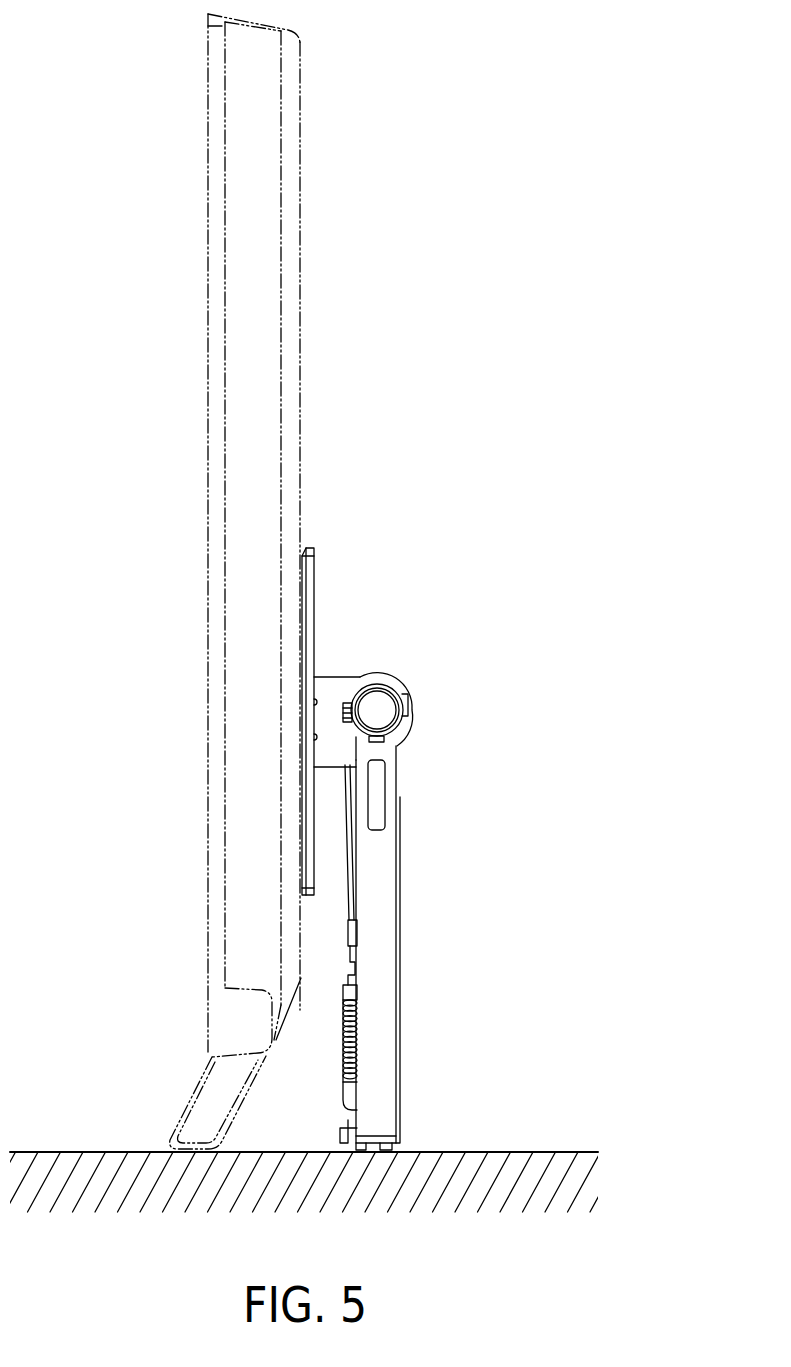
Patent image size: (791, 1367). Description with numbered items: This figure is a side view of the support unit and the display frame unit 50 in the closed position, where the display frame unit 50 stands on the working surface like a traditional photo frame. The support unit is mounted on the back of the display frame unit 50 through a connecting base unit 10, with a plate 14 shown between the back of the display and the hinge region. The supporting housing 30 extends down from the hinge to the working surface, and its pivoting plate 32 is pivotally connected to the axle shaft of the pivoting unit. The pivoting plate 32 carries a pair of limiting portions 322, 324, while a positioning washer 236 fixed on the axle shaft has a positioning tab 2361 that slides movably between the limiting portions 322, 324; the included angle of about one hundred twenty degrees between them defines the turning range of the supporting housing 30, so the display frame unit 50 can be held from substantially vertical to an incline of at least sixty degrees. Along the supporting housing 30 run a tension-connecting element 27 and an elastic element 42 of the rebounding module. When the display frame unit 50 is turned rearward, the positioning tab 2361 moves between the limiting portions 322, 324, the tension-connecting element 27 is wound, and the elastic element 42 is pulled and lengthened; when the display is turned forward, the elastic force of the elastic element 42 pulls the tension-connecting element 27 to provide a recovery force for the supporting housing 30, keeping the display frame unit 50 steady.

The display frame unit 50 is at (208, 283).
The mounting bracket plate 14 is at (317, 591).
The connecting base unit 10 is at (400, 692).
The positioning washer 236 is at (364, 688).
The limiting portion 322 is at (414, 703).
The positioning tab 2361 is at (340, 715).
The limiting portion 324 is at (352, 735).
The pivoting plate 32 is at (395, 775).
The tension-connecting element 27 is at (347, 812).
The supporting housing 30 is at (403, 915).
The elastic element 42 is at (343, 997).